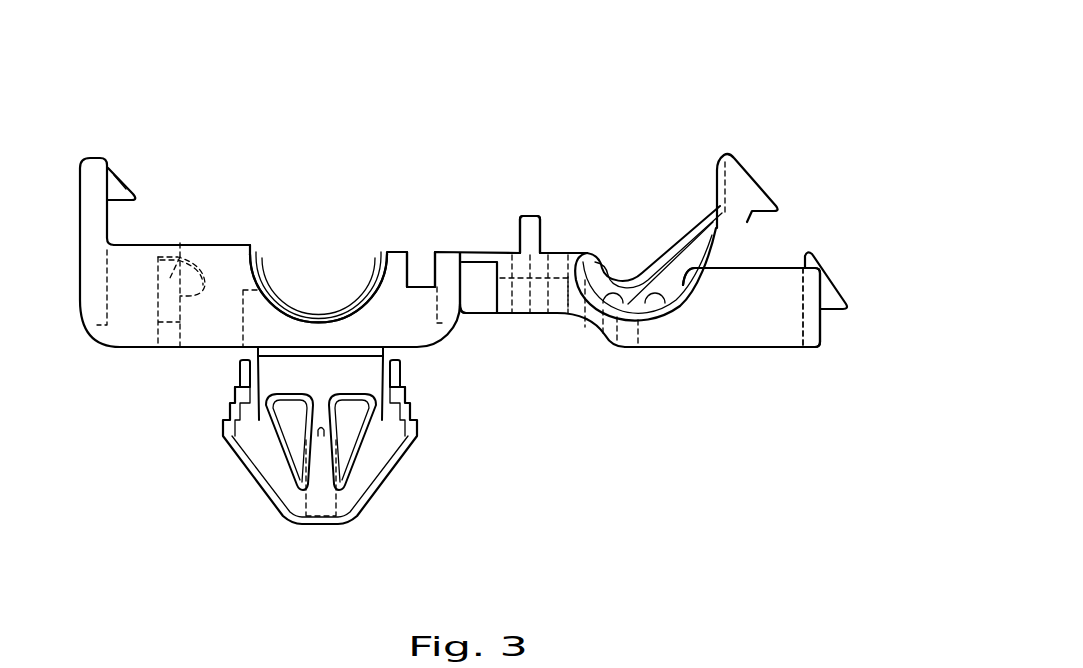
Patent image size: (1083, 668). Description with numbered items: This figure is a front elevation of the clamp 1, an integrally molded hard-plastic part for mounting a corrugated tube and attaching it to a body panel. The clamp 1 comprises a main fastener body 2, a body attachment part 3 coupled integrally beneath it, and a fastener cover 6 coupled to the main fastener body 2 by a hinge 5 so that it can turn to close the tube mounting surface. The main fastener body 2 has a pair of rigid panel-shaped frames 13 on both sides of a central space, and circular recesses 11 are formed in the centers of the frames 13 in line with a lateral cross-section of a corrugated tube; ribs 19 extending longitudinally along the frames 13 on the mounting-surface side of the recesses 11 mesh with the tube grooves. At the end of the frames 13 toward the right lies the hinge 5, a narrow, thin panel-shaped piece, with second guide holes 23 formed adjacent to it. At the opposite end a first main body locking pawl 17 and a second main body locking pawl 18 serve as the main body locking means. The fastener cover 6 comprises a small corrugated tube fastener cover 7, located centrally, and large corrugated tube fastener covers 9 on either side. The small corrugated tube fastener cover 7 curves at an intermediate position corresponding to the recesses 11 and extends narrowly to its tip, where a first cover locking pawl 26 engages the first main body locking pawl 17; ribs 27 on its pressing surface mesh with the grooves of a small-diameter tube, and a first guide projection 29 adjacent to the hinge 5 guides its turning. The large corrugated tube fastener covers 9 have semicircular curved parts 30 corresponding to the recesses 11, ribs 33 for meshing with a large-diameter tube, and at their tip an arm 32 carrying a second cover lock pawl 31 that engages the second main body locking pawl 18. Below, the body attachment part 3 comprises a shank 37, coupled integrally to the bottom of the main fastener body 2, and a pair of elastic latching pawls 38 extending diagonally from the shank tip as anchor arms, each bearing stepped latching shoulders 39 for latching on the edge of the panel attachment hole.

The clamp 1 is at (693, 84).
The main fastener body 2 is at (98, 347).
The body attachment part 3 is at (256, 496).
The hinge 5 is at (473, 257).
The fastener cover 6 is at (867, 122).
The small corrugated tube fastener cover 7 is at (748, 170).
The large corrugated tube fastener covers 9 is at (787, 273).
The circular recesses 11 is at (278, 300).
The frames 13 is at (218, 280).
The first main body locking pawl 17 is at (182, 243).
The second main body locking pawl 18 is at (117, 190).
The ribs 19 is at (350, 300).
The second guide holes 23 is at (420, 270).
The first cover locking pawl 26 is at (770, 215).
The ribs 27 is at (682, 232).
The first guide projection 29 is at (530, 224).
The semicircular curved parts 30 is at (620, 300).
The second cover lock pawl 31 is at (842, 312).
The arm 32 is at (808, 318).
The ribs 33 is at (667, 305).
The shank 37 is at (323, 493).
The latching pawls 38 is at (258, 457).
The latching shoulders 39 is at (235, 380).